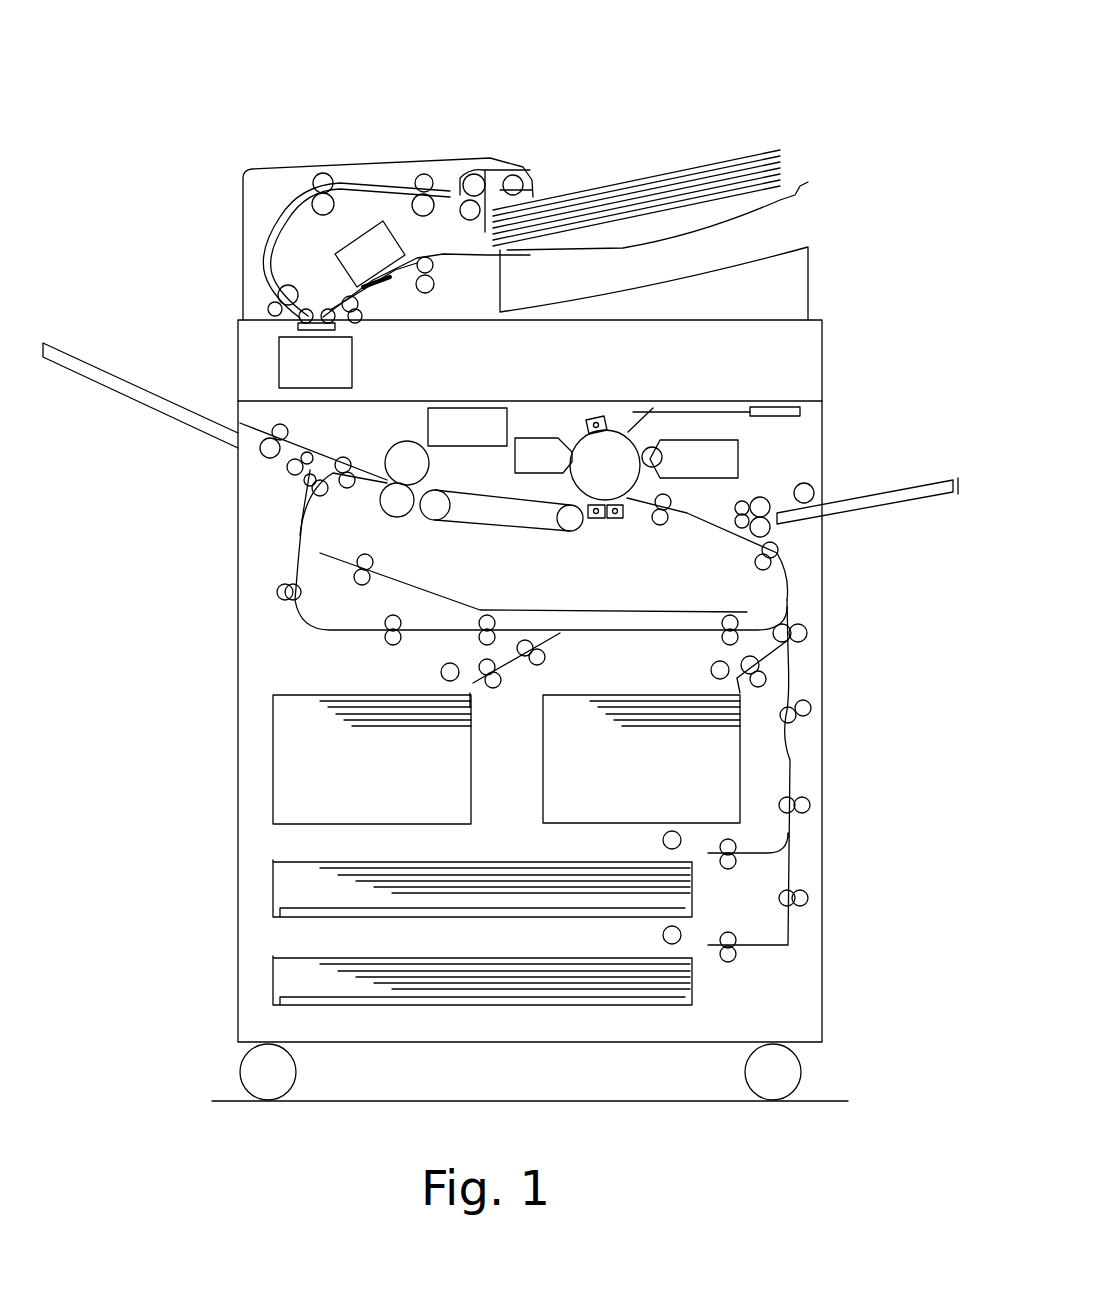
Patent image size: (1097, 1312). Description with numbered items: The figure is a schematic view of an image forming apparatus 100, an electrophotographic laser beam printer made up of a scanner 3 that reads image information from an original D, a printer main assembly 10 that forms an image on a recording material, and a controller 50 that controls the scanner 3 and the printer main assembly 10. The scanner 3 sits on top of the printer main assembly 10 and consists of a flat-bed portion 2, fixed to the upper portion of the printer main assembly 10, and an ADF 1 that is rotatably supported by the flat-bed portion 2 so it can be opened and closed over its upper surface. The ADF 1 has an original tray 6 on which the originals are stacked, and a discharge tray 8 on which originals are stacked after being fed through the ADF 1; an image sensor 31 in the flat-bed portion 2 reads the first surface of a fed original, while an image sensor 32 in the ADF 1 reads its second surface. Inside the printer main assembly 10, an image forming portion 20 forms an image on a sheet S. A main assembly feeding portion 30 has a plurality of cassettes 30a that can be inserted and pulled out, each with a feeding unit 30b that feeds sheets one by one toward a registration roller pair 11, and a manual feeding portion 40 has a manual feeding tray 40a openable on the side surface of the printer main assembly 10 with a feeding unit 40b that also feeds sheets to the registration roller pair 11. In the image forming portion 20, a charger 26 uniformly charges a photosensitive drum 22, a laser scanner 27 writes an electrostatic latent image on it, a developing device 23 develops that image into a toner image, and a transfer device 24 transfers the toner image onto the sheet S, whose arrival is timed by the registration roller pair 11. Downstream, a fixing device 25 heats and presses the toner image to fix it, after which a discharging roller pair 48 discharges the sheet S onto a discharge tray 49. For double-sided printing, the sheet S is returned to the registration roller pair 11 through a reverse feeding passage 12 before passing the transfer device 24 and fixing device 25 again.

The image forming apparatus 100 is at (705, 82).
The ADF 1 is at (832, 231).
The flat-bed portion 2 is at (832, 345).
The scanner 3 is at (893, 163).
The original D is at (553, 195).
The original tray 6 is at (688, 227).
The discharge tray 8 is at (673, 283).
The image sensor 32 is at (333, 252).
The image sensor 31 is at (283, 364).
The controller 50 is at (468, 408).
The laser scanner 27 is at (778, 410).
The charger 26 is at (594, 416).
The photosensitive drum 22 is at (580, 436).
The developing device 23 is at (738, 462).
The image forming portion 20 is at (625, 527).
The transfer device 24 is at (607, 520).
The fixing device 25 is at (393, 447).
The reverse feeding passage 12 is at (430, 630).
The registration roller pair 11 is at (665, 526).
The discharging roller pair 48 is at (265, 462).
The discharge tray 49 is at (122, 393).
The manual feeding portion 40 is at (858, 540).
The manual feeding tray 40a is at (905, 527).
The feeding unit 40b is at (812, 485).
The main assembly feeding portion 30 is at (805, 853).
The cassette 30a is at (473, 720).
The feeding unit 30b is at (440, 670).
The sheet S is at (350, 695).
The printer main assembly 10 is at (830, 777).